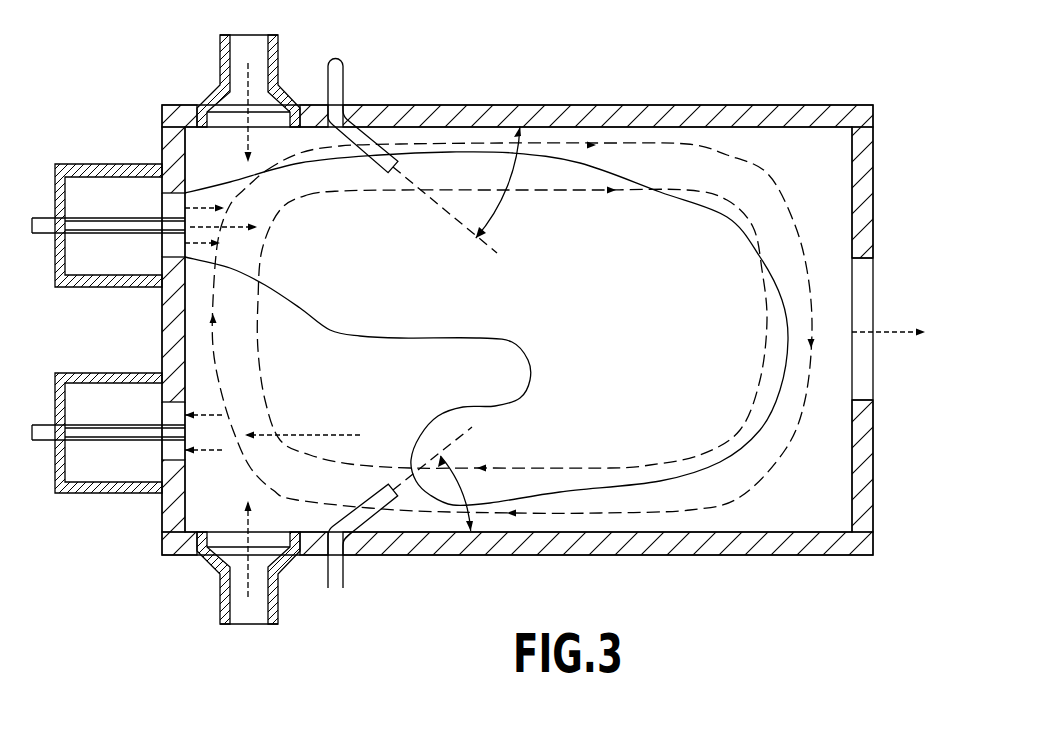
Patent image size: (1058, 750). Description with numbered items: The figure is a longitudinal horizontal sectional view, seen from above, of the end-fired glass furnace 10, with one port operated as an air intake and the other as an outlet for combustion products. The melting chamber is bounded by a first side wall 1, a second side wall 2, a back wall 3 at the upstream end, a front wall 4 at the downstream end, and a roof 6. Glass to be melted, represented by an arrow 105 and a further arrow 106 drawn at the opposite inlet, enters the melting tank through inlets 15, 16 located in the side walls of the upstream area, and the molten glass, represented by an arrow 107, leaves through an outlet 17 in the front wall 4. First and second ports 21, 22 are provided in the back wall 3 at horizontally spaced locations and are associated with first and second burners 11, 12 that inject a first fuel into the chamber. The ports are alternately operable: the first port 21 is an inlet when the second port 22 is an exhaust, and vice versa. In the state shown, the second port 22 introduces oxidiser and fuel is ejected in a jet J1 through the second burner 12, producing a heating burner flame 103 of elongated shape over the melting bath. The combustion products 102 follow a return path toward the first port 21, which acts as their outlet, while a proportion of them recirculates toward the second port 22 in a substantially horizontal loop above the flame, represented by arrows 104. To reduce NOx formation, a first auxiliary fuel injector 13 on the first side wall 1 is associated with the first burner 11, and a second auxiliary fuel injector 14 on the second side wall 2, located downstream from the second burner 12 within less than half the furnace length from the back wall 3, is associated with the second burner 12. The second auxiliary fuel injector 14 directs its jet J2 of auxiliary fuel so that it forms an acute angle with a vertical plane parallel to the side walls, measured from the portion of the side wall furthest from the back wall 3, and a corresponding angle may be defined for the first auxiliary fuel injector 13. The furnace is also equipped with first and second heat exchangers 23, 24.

The first side wall 1 is at (558, 550).
The second side wall 2 is at (490, 118).
The back wall 3 is at (170, 320).
The front wall 4 is at (860, 172).
The roof 6 is at (805, 165).
The end-fired glass furnace 10 is at (443, 92).
The first burner 11 is at (110, 438).
The second burner 12 is at (110, 228).
The first auxiliary fuel injector 13 is at (335, 592).
The second auxiliary fuel injector 14 is at (340, 67).
The inlet 15 is at (280, 599).
The inlet 16 is at (280, 60).
The outlet 17 is at (860, 288).
The first port 21 is at (187, 455).
The second port 22 is at (188, 194).
The first heat exchanger 23 is at (118, 493).
The second heat exchanger 24 is at (118, 165).
The combustion products 102 is at (290, 447).
The heating burner flame 103 is at (563, 164).
The recirculation arrows 104 is at (767, 308).
The arrow representing glass to be melted 105 is at (250, 521).
The top inflow 106 is at (252, 137).
The arrow representing molten glass output 107 is at (900, 336).
The jet J1 is at (228, 228).
The jet of auxiliary fuel J2 is at (408, 174).